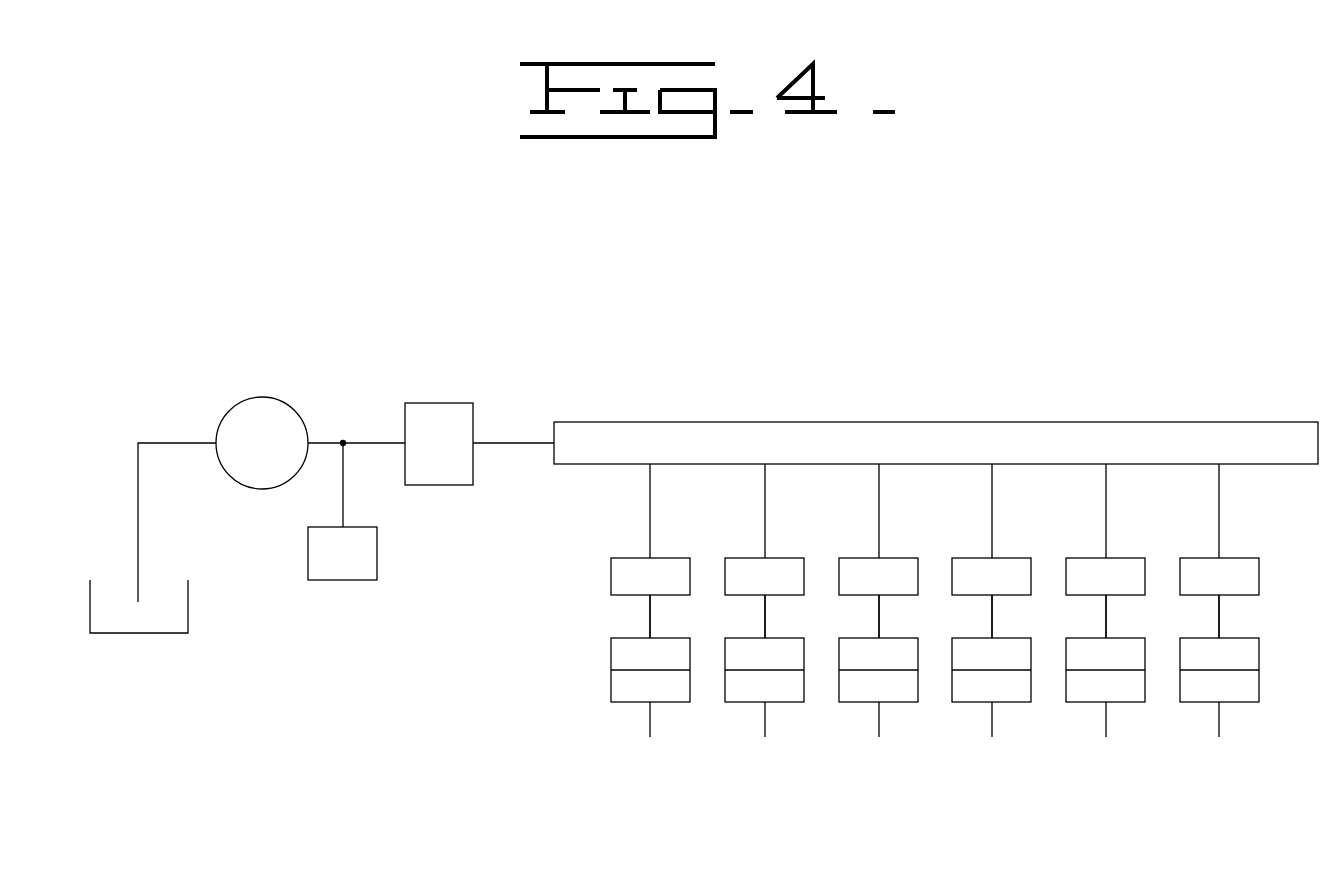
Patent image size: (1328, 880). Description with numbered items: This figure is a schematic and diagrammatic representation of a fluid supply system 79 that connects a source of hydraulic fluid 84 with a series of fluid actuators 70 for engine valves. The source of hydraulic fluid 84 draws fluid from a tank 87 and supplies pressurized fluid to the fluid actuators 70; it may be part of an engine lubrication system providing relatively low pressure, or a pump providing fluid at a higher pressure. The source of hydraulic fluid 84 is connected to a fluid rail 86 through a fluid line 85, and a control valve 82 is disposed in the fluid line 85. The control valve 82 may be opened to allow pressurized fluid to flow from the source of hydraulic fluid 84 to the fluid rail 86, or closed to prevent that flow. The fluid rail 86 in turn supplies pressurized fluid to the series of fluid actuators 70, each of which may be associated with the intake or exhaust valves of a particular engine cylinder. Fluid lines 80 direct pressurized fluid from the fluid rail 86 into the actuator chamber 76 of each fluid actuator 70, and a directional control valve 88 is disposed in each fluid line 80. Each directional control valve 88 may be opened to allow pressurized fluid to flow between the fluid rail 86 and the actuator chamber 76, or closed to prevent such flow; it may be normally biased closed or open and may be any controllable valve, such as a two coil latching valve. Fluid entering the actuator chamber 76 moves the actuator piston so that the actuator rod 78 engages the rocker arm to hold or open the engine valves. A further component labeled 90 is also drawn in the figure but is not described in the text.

The fluid actuator 70 is at (543, 678).
The actuator chamber 76 is at (610, 655).
The actuator rod 78 is at (650, 722).
The fluid supply system 79 is at (707, 337).
The fluid line 80 is at (648, 605).
The control valve 82 is at (453, 403).
The source of hydraulic fluid 84 is at (225, 412).
The fluid line 85 is at (380, 443).
The fluid rail 86 is at (963, 422).
The tank 87 is at (165, 633).
The directional control valve 88 is at (610, 558).
The pressure regulator 90 is at (357, 580).